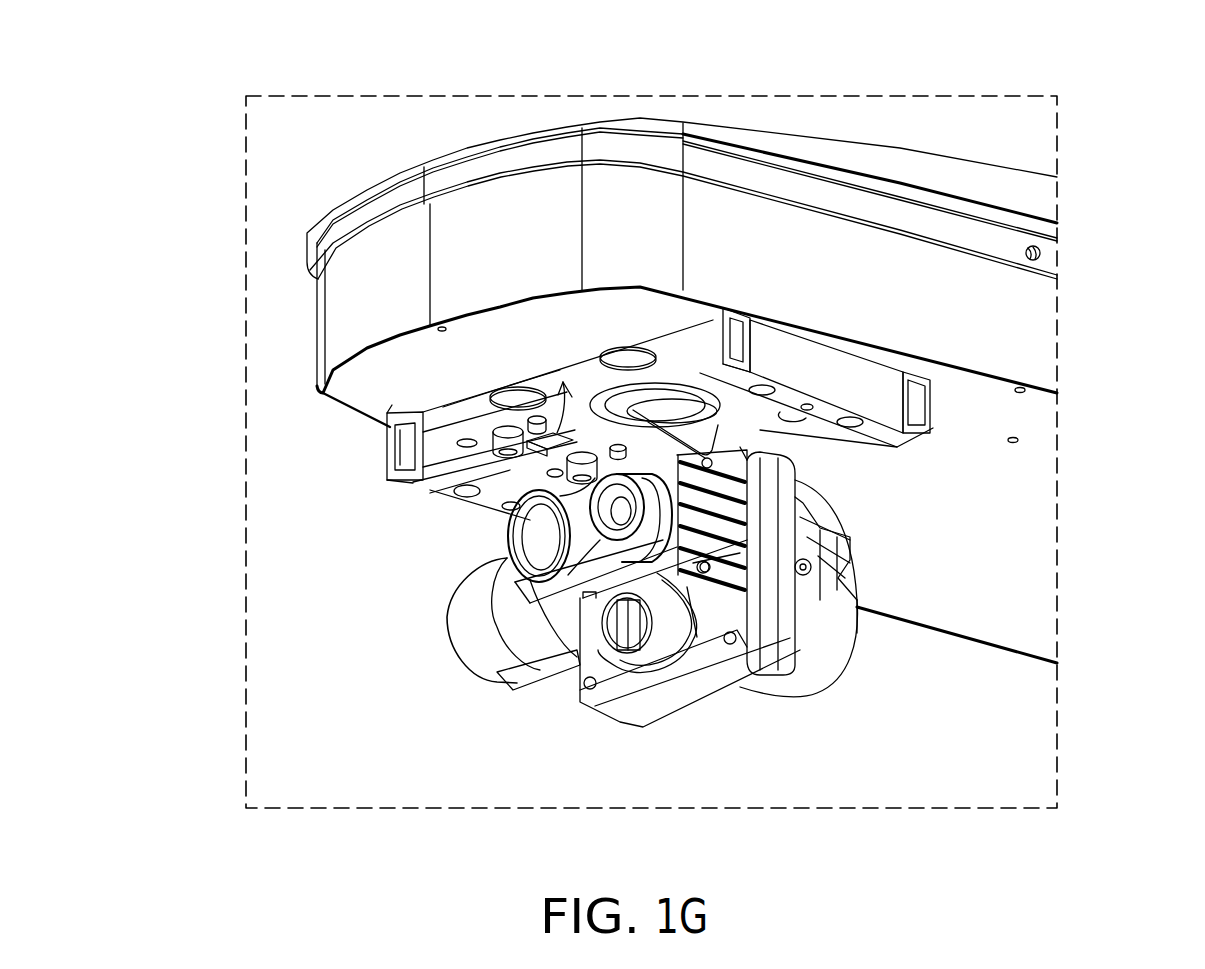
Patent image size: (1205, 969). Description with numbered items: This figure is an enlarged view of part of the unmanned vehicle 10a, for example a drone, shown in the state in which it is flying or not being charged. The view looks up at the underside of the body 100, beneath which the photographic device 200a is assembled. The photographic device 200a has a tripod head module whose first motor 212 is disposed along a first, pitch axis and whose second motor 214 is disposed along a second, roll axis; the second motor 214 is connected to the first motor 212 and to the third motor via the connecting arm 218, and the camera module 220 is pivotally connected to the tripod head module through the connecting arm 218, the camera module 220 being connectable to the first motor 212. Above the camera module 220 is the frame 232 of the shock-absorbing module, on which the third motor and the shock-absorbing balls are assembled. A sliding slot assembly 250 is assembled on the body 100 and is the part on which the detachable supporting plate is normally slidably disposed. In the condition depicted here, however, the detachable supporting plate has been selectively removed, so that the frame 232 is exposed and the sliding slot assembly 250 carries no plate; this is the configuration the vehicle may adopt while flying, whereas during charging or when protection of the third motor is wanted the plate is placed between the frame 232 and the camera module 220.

The unmanned vehicle 10a is at (1177, 831).
The body 100 is at (352, 310).
The photographic device 200a is at (632, 597).
The first motor 212 is at (465, 626).
The second motor 214 is at (827, 667).
The connecting arm 218 is at (820, 527).
The camera module 220 is at (663, 687).
The frame 232 is at (445, 408).
The sliding slot assembly 250 is at (798, 350).